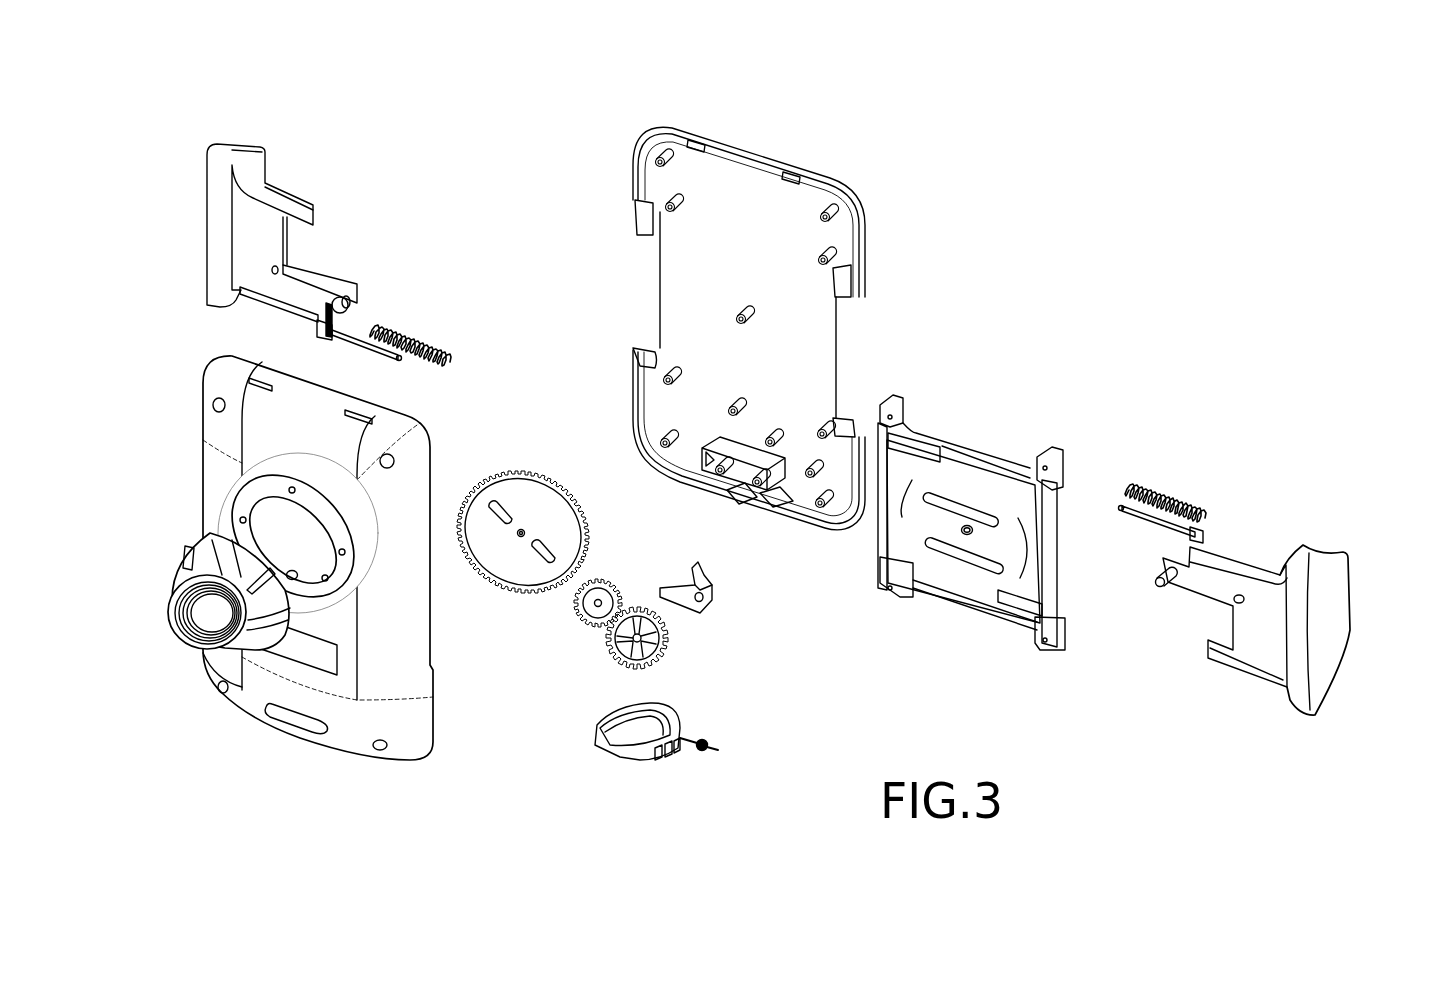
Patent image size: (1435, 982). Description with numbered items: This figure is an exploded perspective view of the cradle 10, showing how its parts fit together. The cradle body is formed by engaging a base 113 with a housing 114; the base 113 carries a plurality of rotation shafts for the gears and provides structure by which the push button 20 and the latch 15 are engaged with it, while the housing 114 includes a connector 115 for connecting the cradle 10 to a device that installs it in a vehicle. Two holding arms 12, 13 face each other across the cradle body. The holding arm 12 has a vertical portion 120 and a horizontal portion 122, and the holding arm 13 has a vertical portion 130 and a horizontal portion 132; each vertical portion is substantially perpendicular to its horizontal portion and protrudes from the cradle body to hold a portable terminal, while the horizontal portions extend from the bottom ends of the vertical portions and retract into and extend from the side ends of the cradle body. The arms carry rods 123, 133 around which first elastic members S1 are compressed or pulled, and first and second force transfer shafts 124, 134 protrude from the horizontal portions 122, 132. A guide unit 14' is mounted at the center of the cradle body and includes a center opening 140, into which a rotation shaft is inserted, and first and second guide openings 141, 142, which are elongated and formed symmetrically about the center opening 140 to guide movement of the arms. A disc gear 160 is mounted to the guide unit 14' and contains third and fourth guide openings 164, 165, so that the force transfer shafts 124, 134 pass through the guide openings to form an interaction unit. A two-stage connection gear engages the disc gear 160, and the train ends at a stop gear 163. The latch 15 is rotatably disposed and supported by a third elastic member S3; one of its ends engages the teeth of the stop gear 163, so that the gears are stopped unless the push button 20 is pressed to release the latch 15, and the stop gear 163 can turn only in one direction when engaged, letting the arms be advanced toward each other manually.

The cradle 10 is at (990, 190).
The holding arm 12 is at (308, 182).
The holding arm 13 is at (1257, 588).
The guide unit 14' is at (971, 506).
The latch 15 is at (712, 594).
The push button 20 is at (612, 752).
The base 113 is at (764, 138).
The housing 114 is at (428, 763).
The connector 115 is at (180, 631).
The vertical portion 120 is at (258, 142).
The horizontal portion 122 is at (327, 268).
The rod 123 is at (406, 360).
The first force transfer shaft 124 is at (350, 300).
The vertical portion 130 is at (1342, 604).
The horizontal portion 132 is at (1260, 660).
The rod 133 is at (1147, 518).
The second force transfer shaft 134 is at (1158, 587).
The center opening 140 is at (964, 536).
The first guide opening 141 is at (1000, 500).
The second guide opening 142 is at (972, 562).
The disc gear 160 is at (534, 539).
The stop gear 163 is at (664, 661).
The third guide opening 164 is at (503, 512).
The fourth guide opening 165 is at (546, 550).
The first elastic member S1 is at (416, 334).
The third elastic member S3 is at (712, 748).